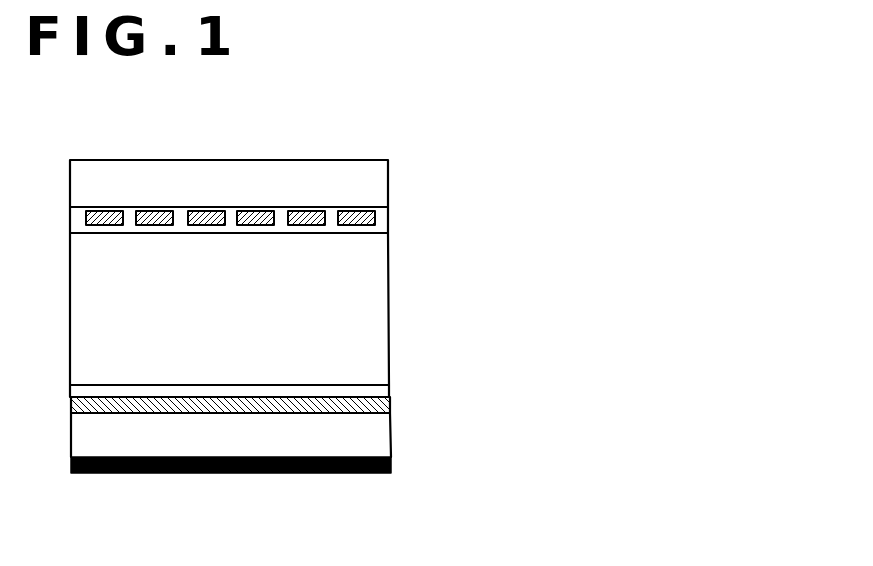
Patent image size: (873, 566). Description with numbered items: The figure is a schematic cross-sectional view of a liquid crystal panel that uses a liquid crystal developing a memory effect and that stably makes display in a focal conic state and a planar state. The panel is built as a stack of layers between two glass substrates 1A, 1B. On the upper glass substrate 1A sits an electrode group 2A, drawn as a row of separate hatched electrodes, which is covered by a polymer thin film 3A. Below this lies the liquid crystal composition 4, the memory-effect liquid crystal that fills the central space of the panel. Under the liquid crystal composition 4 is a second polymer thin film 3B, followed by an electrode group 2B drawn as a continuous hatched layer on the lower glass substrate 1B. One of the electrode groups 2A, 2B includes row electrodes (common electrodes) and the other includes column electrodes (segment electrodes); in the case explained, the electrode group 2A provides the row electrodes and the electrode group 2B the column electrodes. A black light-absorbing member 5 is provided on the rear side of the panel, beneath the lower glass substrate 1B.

The glass substrate 1A is at (386, 163).
The electrode group 2A is at (367, 207).
The polymer thin film 3A is at (385, 226).
The liquid crystal composition 4 is at (378, 323).
The polymer thin film 3B is at (380, 386).
The electrode group 2B is at (384, 398).
The glass substrate 1B is at (392, 451).
The black light-absorbing member 5 is at (392, 464).